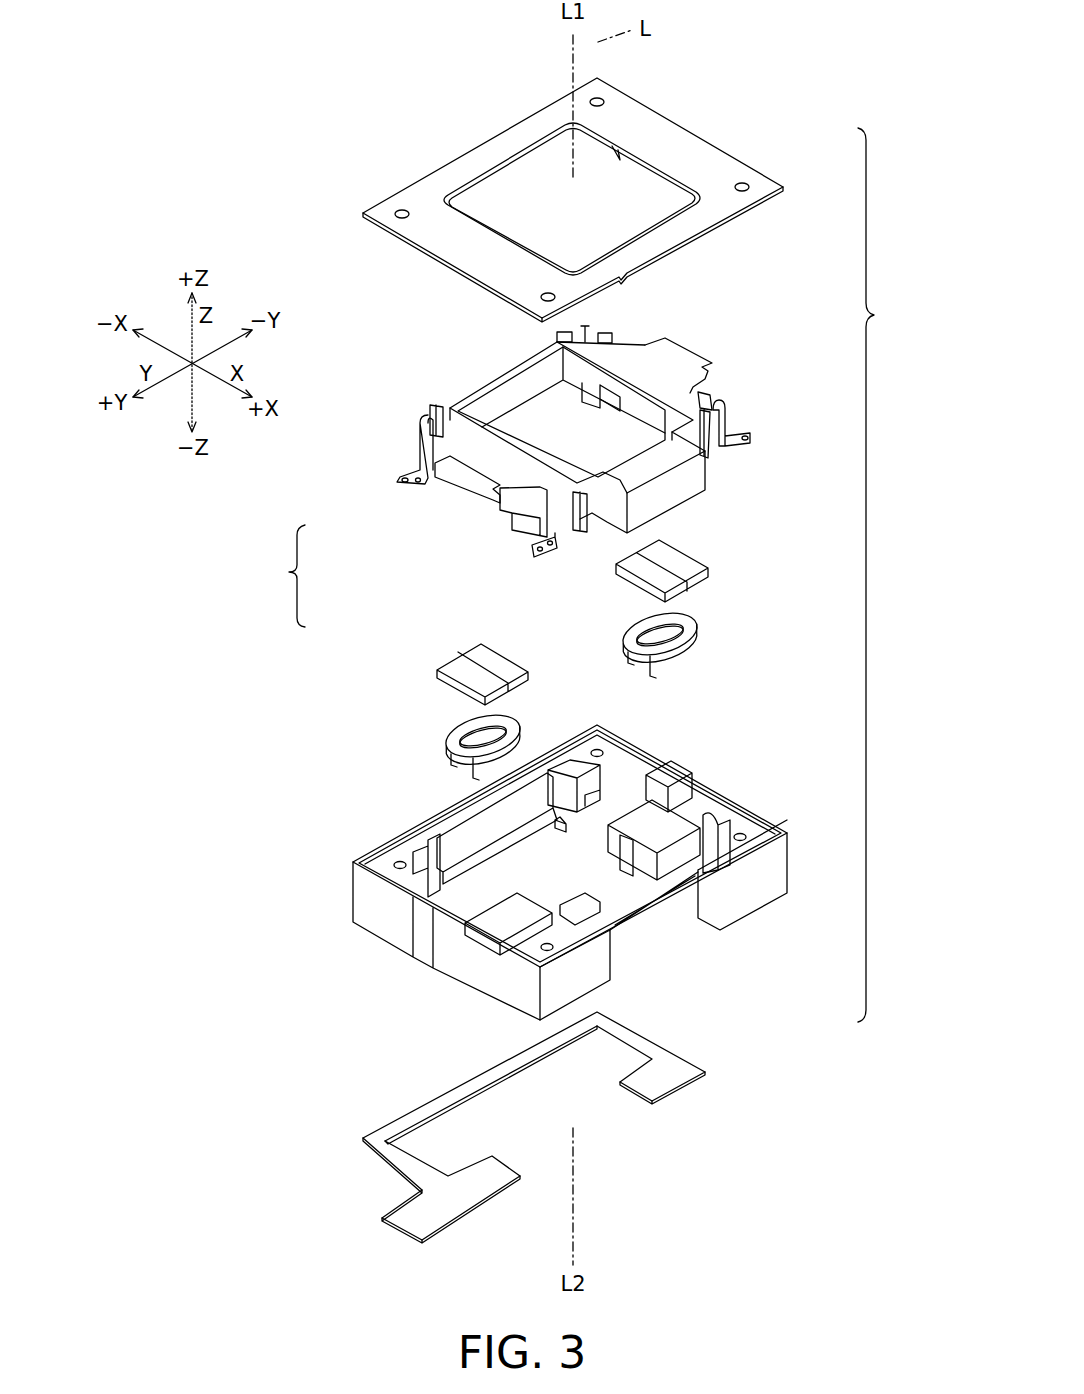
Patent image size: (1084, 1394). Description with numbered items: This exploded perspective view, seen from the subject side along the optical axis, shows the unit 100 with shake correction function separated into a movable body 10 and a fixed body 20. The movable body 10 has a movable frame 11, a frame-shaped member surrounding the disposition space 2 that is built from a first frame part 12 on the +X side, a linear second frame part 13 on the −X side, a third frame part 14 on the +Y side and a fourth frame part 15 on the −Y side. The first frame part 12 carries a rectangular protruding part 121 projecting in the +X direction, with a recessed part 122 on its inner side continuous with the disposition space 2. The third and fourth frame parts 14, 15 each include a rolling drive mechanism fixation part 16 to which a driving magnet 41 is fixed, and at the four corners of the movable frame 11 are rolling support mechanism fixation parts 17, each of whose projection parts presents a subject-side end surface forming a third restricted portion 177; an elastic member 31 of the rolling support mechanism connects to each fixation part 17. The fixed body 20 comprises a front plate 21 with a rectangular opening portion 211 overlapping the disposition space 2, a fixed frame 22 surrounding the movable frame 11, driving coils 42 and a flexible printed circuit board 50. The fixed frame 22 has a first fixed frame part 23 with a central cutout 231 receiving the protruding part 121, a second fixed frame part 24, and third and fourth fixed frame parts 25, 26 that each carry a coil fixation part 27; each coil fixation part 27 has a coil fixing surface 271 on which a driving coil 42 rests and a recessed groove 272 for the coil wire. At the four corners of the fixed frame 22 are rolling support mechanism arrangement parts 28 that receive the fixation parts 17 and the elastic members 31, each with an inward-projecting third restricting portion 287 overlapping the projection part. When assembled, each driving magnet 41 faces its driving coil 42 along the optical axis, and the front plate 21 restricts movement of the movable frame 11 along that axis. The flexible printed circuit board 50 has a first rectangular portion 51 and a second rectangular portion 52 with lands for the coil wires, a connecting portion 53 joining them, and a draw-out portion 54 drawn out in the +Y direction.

The unit with shake correction function 100 is at (316, 120).
The disposition space 2 is at (535, 430).
The movable body 10 is at (559, 788).
The movable frame 11 is at (564, 452).
The first frame part 12 is at (564, 452).
The protruding part 121 is at (548, 440).
The recessed part 122 is at (620, 480).
The second frame part 13 is at (490, 375).
The third frame part 14 is at (500, 455).
The fourth frame part 15 is at (650, 402).
The rolling drive mechanism fixation part 16 is at (683, 355).
The rolling support mechanism fixation part 17 is at (590, 315).
The third restricted portion 177 is at (557, 337).
The fixed body 20 is at (581, 684).
The front plate 21 is at (610, 200).
The opening portion 211 is at (620, 158).
The fixed frame 22 is at (594, 852).
The first fixed frame part 23 is at (730, 915).
The cutout 231 is at (612, 958).
The second fixed frame part 24 is at (462, 813).
The third fixed frame part 25 is at (390, 933).
The fourth fixed frame part 26 is at (680, 765).
The coil fixation part 27 is at (565, 867).
The coil fixing surface 271 is at (565, 867).
The recessed groove 272 is at (620, 835).
The rolling support mechanism arrangement part 28 is at (575, 770).
The third restricting portion 287 is at (558, 826).
The elastic member 31 is at (612, 337).
The driving magnet 41 is at (433, 672).
The driving coil 42 is at (518, 720).
The flexible printed circuit board 50 is at (612, 1141).
The first rectangular portion 51 is at (660, 1087).
The second rectangular portion 52 is at (490, 1162).
The connecting portion 53 is at (485, 1068).
The draw-out portion 54 is at (428, 1220).